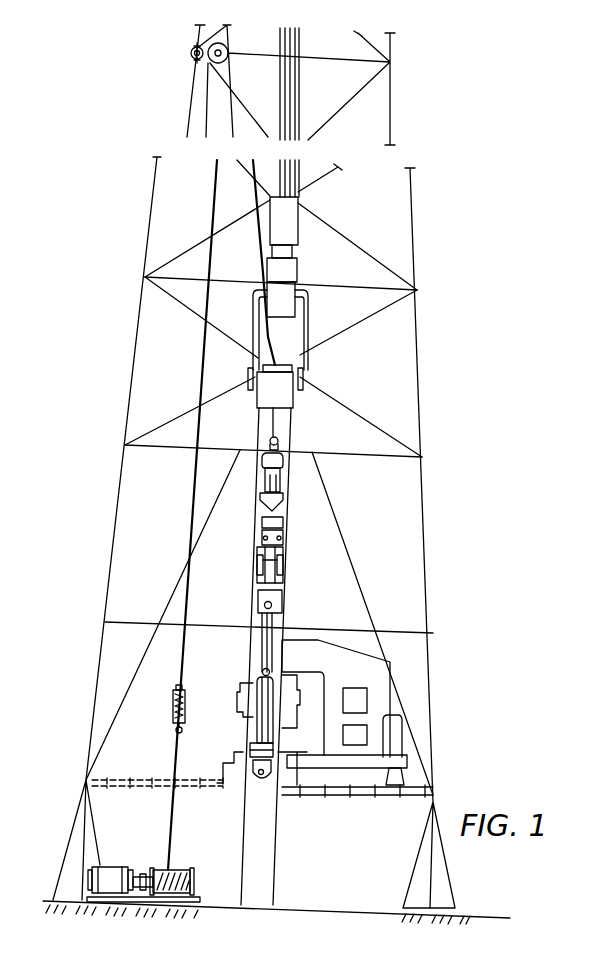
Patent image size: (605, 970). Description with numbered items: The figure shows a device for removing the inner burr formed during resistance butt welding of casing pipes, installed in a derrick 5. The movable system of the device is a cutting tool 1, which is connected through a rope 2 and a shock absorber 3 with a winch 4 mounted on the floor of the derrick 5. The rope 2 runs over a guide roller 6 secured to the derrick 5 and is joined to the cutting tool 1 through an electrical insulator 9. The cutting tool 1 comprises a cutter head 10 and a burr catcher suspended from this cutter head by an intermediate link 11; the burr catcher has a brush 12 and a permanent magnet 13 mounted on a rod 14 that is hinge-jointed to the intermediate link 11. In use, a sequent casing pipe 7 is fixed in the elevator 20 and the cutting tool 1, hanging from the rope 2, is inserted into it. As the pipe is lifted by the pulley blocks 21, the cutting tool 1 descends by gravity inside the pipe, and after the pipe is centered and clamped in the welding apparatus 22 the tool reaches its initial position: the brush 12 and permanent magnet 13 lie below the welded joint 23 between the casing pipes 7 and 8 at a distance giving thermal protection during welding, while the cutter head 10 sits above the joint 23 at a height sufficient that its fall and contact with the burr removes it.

The cutting tool 1 is at (293, 619).
The rope 2 is at (204, 357).
The shock absorber 3 is at (173, 707).
The winch 4 is at (137, 861).
The derrick 5 is at (425, 503).
The guide roller 6 is at (232, 48).
The casing pipe 7 is at (266, 430).
The casing pipe 8 is at (270, 859).
The electrical insulator 9 is at (266, 462).
The cutter head 10 is at (287, 554).
The intermediate link 11 is at (262, 626).
The brush 12 is at (275, 752).
The permanent magnet 13 is at (268, 780).
The rod 14 is at (262, 690).
The elevator 20 is at (290, 381).
The pulley blocks 21 is at (307, 203).
The welding apparatus 22 is at (371, 672).
The welded joint 23 is at (282, 700).